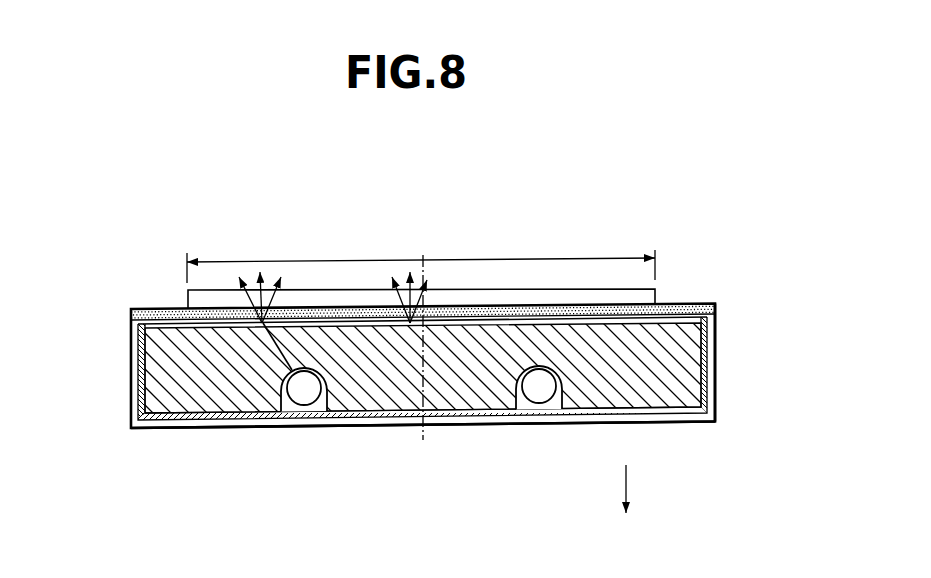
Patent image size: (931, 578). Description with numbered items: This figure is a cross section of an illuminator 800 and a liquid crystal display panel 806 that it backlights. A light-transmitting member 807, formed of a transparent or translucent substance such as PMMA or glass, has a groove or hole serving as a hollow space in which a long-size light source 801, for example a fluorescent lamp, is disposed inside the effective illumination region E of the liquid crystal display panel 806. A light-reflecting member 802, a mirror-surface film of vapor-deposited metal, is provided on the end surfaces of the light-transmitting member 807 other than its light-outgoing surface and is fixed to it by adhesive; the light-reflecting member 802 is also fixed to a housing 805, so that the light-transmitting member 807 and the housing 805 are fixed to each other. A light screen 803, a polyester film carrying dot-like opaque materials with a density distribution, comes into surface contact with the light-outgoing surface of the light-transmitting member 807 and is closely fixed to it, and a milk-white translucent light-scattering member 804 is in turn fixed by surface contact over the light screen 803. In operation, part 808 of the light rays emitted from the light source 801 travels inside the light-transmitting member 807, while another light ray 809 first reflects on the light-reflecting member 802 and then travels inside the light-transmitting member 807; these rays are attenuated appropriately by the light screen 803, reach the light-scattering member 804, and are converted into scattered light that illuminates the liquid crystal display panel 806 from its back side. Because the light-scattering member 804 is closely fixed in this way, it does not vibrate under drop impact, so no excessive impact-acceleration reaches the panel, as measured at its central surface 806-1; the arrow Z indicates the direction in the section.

The illuminator 800 is at (752, 485).
The light source 801 is at (310, 411).
The light-reflecting member 802 is at (362, 416).
The light screen 803 is at (693, 304).
The light-scattering member 804 is at (139, 309).
The housing 805 is at (715, 378).
The liquid crystal display panel 806 is at (657, 292).
The central surface 806-1 is at (427, 282).
The light-transmitting member 807 is at (165, 405).
The part of light rays 808 is at (280, 350).
The light ray 809 is at (470, 377).
The effective illumination region E is at (423, 256).
The Z direction Z is at (641, 489).